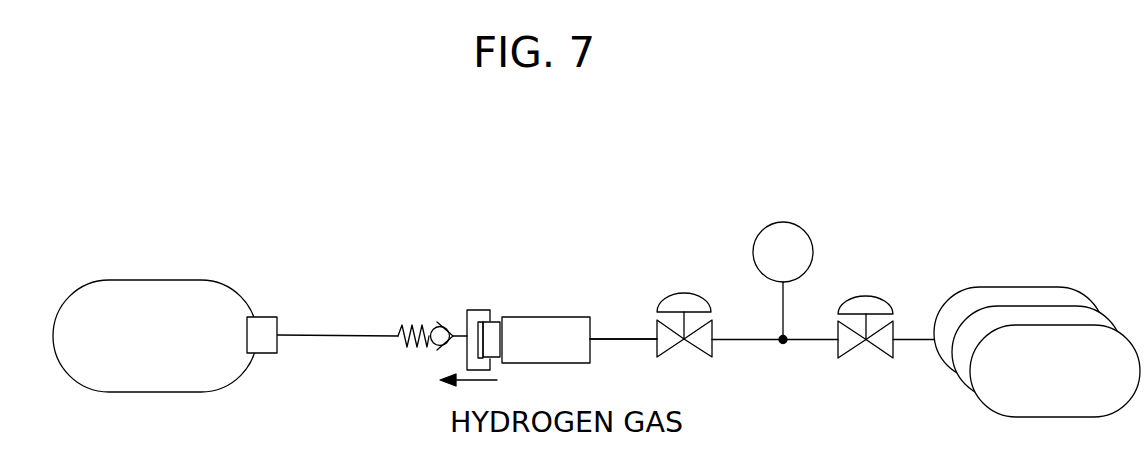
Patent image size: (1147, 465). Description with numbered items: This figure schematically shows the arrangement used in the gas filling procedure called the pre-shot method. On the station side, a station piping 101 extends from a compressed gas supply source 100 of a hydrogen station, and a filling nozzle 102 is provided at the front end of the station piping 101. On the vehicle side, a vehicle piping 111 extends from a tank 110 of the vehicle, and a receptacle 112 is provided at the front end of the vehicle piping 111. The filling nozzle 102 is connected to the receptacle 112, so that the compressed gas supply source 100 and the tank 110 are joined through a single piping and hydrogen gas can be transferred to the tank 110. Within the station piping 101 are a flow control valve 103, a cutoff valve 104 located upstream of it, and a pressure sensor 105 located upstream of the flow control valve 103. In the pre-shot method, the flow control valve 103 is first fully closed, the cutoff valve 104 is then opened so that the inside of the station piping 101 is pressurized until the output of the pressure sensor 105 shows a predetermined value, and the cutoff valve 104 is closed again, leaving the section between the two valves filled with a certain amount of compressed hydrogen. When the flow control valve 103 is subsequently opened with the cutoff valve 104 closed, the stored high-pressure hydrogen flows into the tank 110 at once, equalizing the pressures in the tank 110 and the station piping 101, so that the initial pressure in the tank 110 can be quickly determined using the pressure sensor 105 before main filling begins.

The compressed gas supply source 100 is at (1048, 285).
The station piping 101 is at (623, 340).
The filling nozzle 102 is at (548, 317).
The flow control valve 103 is at (700, 298).
The cutoff valve 104 is at (883, 297).
The pressure sensor 105 is at (818, 203).
The tank 110 is at (200, 283).
The vehicle piping 111 is at (303, 335).
The receptacle 112 is at (477, 308).